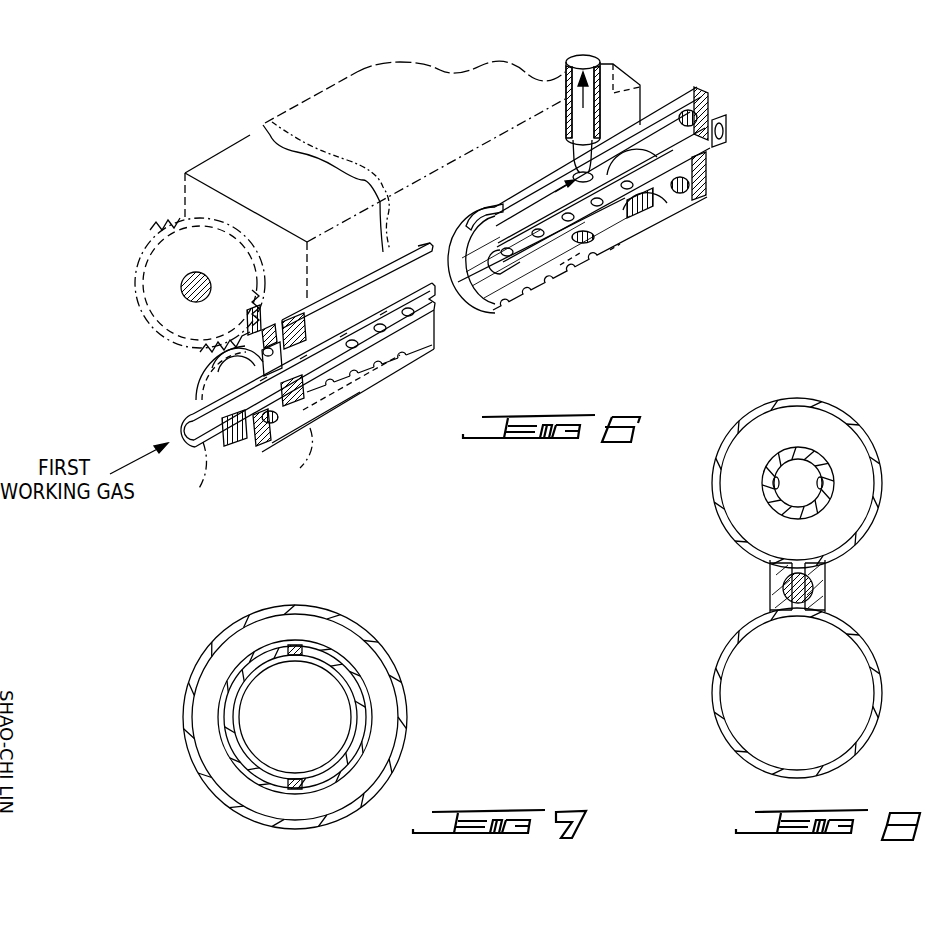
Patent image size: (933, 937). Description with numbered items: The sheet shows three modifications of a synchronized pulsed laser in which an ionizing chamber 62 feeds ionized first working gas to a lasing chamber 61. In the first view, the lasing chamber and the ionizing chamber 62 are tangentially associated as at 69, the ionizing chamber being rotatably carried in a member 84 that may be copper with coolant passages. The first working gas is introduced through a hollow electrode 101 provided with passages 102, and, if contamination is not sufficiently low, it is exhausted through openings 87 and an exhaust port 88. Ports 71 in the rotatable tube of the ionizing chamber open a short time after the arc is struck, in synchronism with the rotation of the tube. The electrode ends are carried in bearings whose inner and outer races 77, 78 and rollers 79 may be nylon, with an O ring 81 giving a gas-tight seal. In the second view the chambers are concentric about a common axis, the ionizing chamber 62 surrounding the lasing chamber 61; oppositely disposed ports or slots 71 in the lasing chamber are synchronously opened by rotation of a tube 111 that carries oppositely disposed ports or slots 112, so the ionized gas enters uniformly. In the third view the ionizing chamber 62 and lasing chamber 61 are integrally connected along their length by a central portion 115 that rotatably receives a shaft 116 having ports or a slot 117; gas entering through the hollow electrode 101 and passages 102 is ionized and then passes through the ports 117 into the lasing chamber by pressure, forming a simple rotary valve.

In FIG. 7, the lasing chamber 61 is at (295, 717).
In FIG. 8, the lasing chamber 61 is at (797, 693).
In FIG. 6, the ionizing chamber 62 is at (392, 265).
In FIG. 7, the ionizing chamber 62 is at (201, 696).
In FIG. 8, the ionizing chamber 62 is at (797, 483).
In FIG. 6, the tangential association 69 is at (414, 244).
In FIG. 6, the ports 71 is at (392, 374).
In FIG. 7, the ports 71 is at (295, 656).
In FIG. 6, the inner race 77 is at (228, 370).
In FIG. 6, the outer race 78 is at (226, 356).
In FIG. 6, the rollers 79 is at (282, 442).
In FIG. 6, the O ring 81 is at (306, 410).
In FIG. 6, the member 84 is at (230, 158).
In FIG. 6, the openings 87 is at (586, 242).
In FIG. 6, the exhaust port 88 is at (586, 58).
In FIG. 6, the hollow electrode 101 is at (331, 392).
In FIG. 8, the hollow electrode 101 is at (792, 458).
In FIG. 6, the passages 102 is at (413, 316).
In FIG. 8, the passages 102 is at (770, 486).
In FIG. 7, the tube 111 is at (372, 713).
In FIG. 7, the ports or slots 112 is at (342, 655).
In FIG. 8, the central portion 115 is at (770, 601).
In FIG. 8, the shaft 116 is at (826, 601).
In FIG. 8, the ports or slot 117 is at (798, 610).